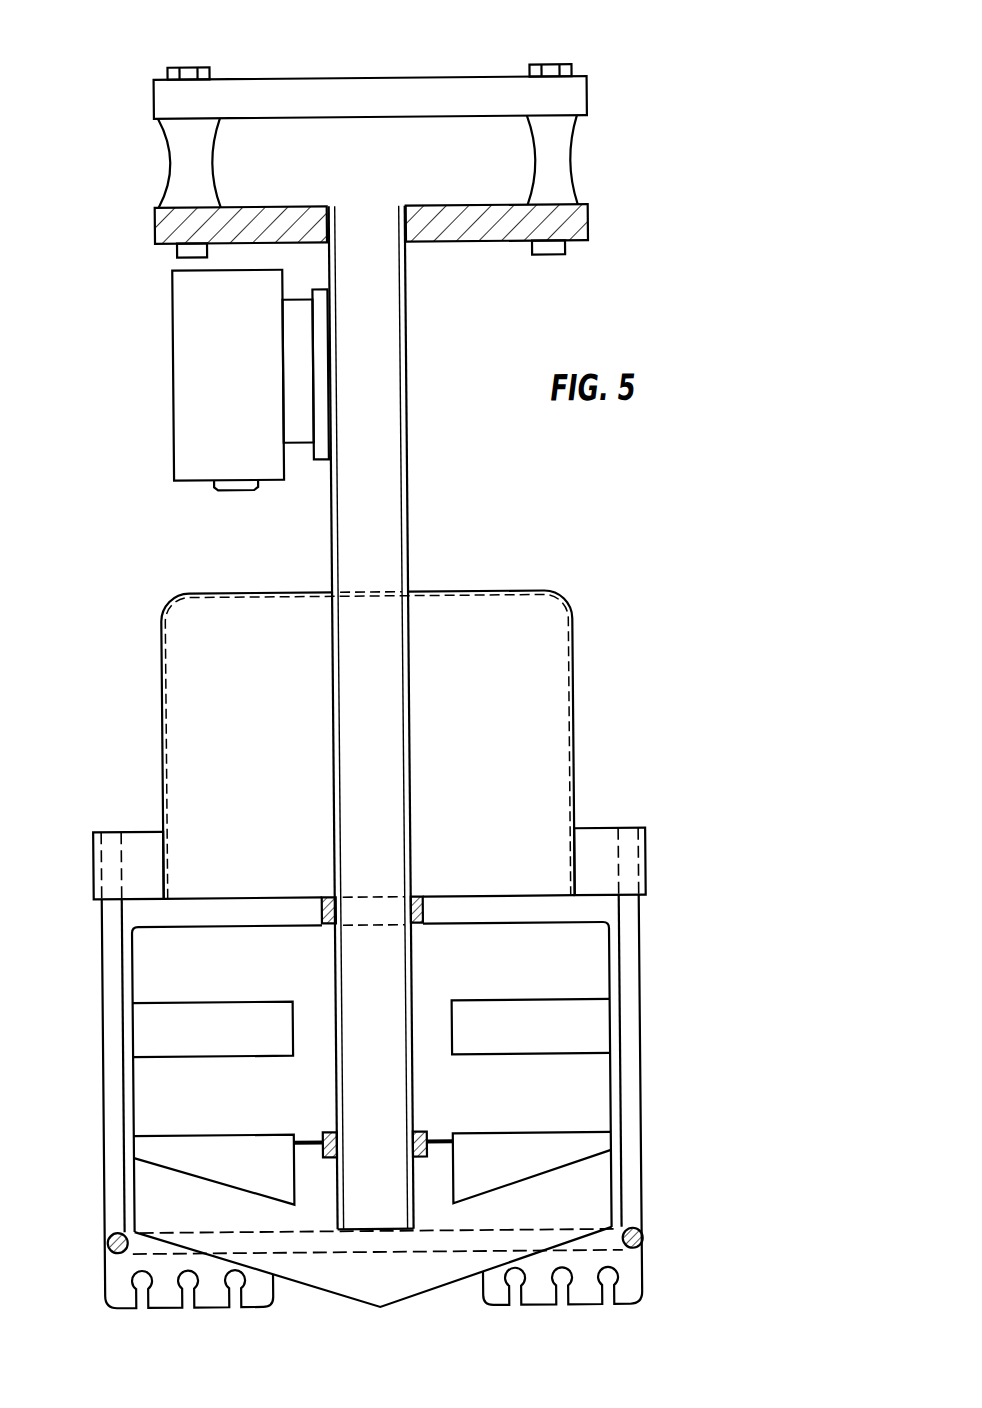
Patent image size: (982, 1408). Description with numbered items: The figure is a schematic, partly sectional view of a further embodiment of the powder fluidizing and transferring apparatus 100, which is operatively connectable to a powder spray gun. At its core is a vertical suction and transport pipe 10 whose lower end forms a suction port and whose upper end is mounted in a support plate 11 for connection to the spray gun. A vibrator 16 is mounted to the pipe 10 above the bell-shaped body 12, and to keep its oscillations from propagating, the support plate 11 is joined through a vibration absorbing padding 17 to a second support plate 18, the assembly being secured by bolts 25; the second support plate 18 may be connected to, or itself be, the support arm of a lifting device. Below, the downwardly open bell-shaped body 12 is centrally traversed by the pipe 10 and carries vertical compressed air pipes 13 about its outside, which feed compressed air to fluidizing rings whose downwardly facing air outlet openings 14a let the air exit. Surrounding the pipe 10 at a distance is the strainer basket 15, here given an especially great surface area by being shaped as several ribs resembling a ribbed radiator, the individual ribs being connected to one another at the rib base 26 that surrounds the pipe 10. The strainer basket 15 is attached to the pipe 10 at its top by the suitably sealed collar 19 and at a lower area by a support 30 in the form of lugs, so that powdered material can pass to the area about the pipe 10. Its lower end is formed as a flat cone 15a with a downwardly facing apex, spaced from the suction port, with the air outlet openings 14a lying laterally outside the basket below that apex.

The powder fluidizing and transferring apparatus 100 is at (577, 569).
The vertical suction and transport pipe 10 is at (390, 521).
The support plate 11 is at (581, 229).
The bell-shaped body 12 is at (577, 730).
The compressed air pipes 13 is at (401, 1096).
The air outlet openings 14a is at (513, 1303).
The strainer basket 15 is at (360, 1127).
The flat cone 15a is at (342, 1297).
The vibrator 16 is at (202, 415).
The vibration absorbing padding 17 is at (567, 175).
The second support plate 18 is at (582, 99).
The collar 19 is at (415, 895).
The bolts 25 is at (552, 64).
The rib base 26 is at (299, 1082).
The support 30 is at (431, 1149).